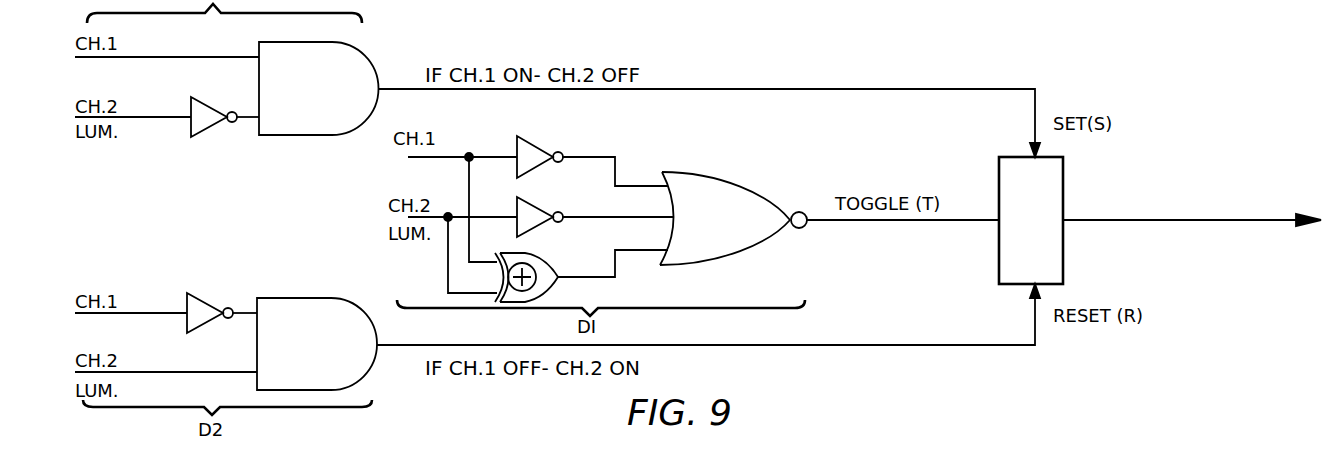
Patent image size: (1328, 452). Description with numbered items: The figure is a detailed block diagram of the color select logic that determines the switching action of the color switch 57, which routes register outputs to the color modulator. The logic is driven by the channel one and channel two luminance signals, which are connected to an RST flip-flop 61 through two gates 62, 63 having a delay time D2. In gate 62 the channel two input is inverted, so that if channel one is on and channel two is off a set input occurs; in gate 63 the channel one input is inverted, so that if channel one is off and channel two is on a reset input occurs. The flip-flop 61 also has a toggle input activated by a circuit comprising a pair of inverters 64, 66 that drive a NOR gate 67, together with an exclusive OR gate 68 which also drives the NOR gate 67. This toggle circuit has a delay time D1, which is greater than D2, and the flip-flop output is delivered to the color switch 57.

The color switch 57 is at (1192, 229).
The RST flip-flop 61 is at (1063, 230).
The gate 62 is at (375, 66).
The gate 63 is at (305, 298).
The inverter 64 is at (523, 136).
The inverter 66 is at (532, 200).
The NOR gate 67 is at (698, 172).
The exclusive OR gate 68 is at (544, 265).